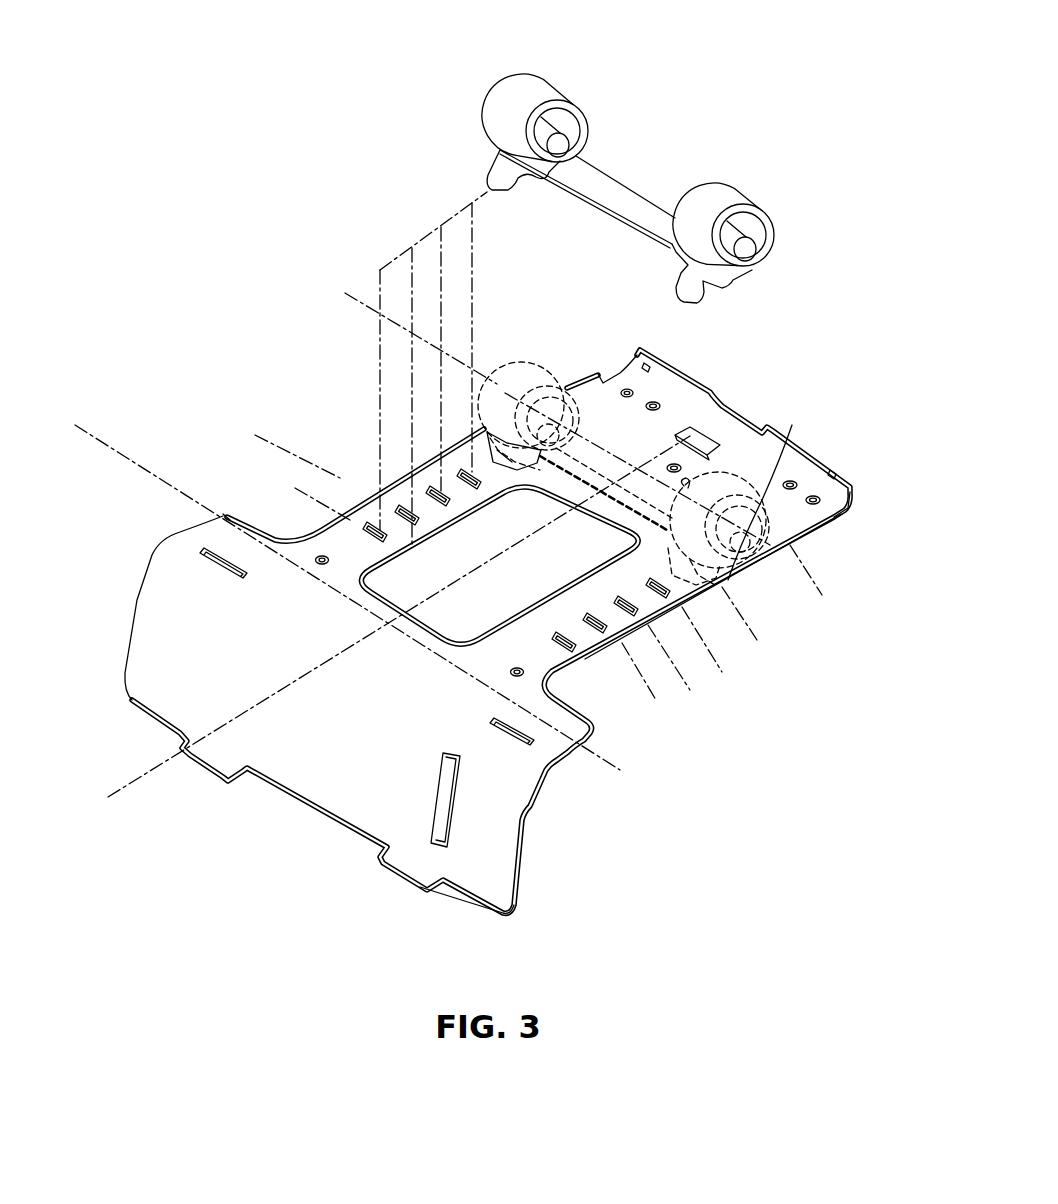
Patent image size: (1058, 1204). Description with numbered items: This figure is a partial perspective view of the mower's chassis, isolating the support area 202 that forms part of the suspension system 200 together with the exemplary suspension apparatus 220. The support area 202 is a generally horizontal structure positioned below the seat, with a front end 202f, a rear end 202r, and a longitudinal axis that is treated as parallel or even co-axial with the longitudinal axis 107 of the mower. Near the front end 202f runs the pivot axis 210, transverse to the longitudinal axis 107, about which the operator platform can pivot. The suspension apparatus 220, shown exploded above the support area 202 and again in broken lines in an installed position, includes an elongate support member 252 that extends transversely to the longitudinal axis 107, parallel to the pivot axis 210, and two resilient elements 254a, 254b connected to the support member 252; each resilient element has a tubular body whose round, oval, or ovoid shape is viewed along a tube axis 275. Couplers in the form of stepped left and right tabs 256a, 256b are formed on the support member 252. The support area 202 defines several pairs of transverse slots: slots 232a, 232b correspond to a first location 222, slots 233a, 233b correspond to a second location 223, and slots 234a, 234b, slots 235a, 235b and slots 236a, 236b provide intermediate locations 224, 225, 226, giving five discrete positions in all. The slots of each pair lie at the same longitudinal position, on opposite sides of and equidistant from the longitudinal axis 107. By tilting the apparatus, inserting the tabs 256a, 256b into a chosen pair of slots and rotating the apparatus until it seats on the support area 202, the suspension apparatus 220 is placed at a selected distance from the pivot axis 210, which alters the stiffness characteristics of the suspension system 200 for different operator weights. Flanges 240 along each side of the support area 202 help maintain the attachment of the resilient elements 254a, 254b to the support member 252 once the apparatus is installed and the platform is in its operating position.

The suspension system 200 is at (245, 306).
The longitudinal axis 107 is at (130, 785).
The pivot axis 210 is at (160, 478).
The suspension apparatus 220 is at (602, 309).
The support member 252 is at (613, 207).
The resilient element 254a is at (747, 193).
The resilient element 254b is at (500, 90).
The left tab 256a is at (703, 297).
The right tab 256b is at (500, 173).
The tube axis 275 is at (358, 293).
The flanges 240 is at (370, 500).
The support area 202 is at (797, 540).
The rear end 202r is at (855, 492).
The front end 202f is at (487, 713).
The slot 232a is at (548, 636).
The slot 232b is at (385, 542).
The slot 233a is at (662, 565).
The slot 233b is at (520, 471).
The slot 234a is at (582, 616).
The slot 234b is at (413, 523).
The slot 235a is at (616, 597).
The slot 235b is at (445, 504).
The slot 236a is at (647, 581).
The slot 236b is at (472, 488).
The first location 222 is at (620, 672).
The second location 223 is at (780, 605).
The location 224 is at (672, 670).
The location 225 is at (718, 665).
The location 226 is at (753, 643).